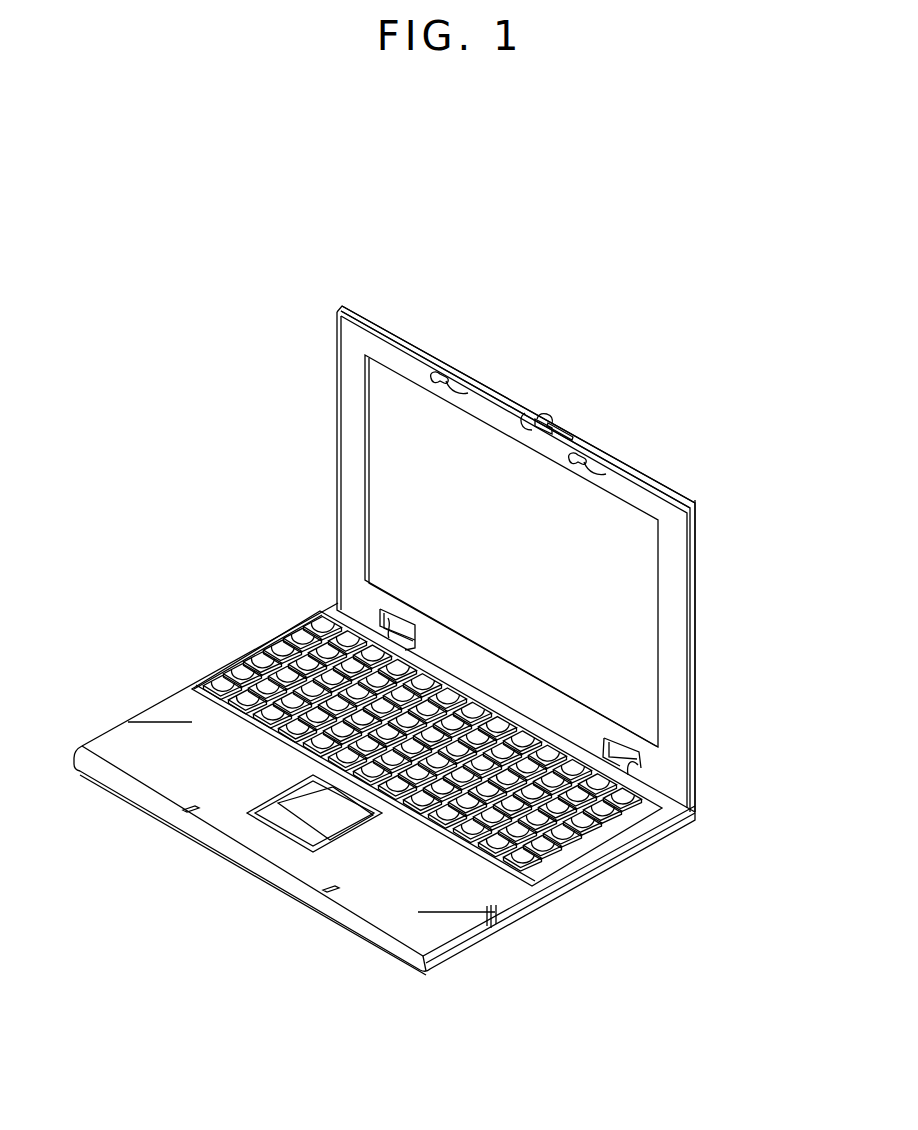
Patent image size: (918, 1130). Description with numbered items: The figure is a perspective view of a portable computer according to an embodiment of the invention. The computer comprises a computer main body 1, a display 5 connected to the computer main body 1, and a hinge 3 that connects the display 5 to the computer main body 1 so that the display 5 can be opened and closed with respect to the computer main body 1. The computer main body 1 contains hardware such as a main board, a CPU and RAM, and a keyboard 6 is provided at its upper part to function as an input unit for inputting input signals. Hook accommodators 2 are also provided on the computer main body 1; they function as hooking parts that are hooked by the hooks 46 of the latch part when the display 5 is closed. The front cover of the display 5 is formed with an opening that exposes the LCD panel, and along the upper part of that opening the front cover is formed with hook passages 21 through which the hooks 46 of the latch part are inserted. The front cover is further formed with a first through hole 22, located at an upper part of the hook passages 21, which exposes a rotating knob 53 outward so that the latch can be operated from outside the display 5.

The computer main body 1 is at (533, 915).
The hook accommodators 2 is at (190, 812).
The hinge 3 is at (352, 612).
The display 5 is at (682, 636).
The keyboard 6 is at (603, 850).
The hook passages 21 is at (482, 384).
The first through hole 22 is at (527, 405).
The hooks 46 is at (440, 364).
The rotating knob 53 is at (568, 428).